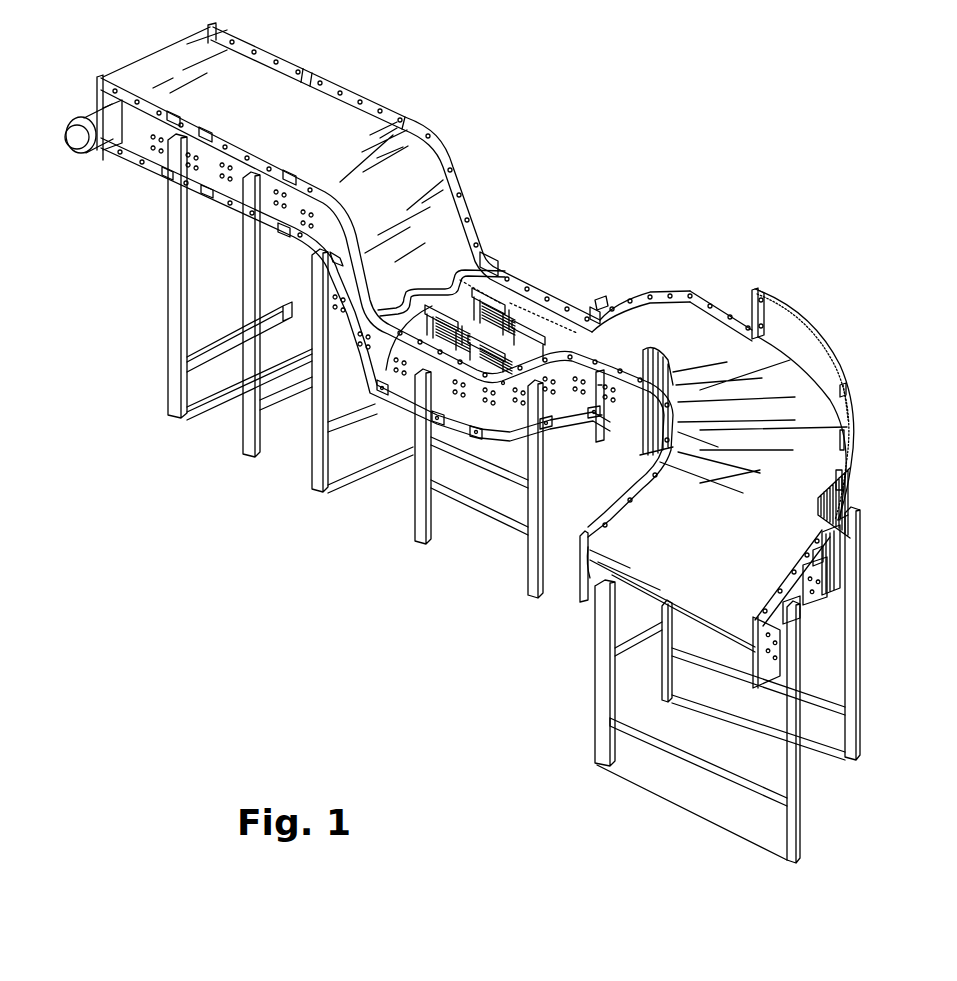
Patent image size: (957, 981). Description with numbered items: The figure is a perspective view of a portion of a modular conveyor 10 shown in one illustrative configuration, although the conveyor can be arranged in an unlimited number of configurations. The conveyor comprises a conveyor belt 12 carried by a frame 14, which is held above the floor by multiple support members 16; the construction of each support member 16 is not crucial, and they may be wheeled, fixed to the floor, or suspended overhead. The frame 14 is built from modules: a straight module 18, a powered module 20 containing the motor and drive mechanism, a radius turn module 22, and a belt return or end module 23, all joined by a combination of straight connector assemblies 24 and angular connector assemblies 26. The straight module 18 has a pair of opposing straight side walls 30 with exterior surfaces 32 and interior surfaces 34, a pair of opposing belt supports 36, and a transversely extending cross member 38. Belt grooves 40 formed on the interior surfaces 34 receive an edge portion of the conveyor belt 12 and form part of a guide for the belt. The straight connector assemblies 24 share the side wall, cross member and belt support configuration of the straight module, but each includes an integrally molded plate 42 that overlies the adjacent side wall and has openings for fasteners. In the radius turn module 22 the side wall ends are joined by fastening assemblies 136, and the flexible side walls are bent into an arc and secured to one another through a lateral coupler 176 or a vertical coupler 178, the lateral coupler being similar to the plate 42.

The modular conveyor 10 is at (608, 138).
The conveyor belt 12 is at (400, 195).
The frame 14 is at (93, 100).
The support member 16 is at (177, 420).
The straight module 18 is at (381, 100).
The powered module 20 is at (292, 57).
The radius turn module 22 is at (822, 328).
The end module 23 is at (802, 622).
The straight connector assembly 24 is at (320, 72).
The angular connector assembly 26 is at (449, 139).
The side wall 30 is at (560, 310).
The exterior surface 32 is at (472, 404).
The interior surface 34 is at (523, 310).
The belt support 36 is at (470, 300).
The cross member 38 is at (503, 293).
The belt groove 40 is at (598, 300).
The plate 42 is at (170, 115).
The fastening assembly 136 is at (866, 478).
The lateral coupler 176 is at (850, 390).
The vertical coupler 178 is at (853, 427).